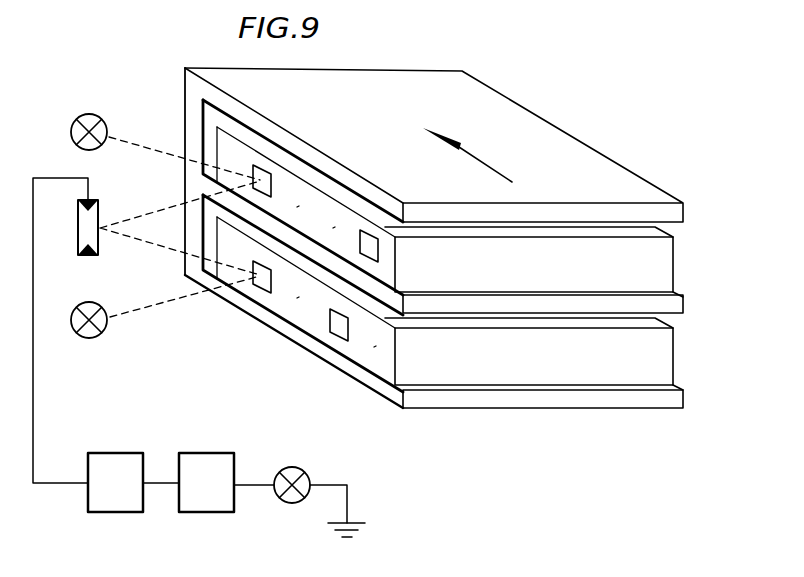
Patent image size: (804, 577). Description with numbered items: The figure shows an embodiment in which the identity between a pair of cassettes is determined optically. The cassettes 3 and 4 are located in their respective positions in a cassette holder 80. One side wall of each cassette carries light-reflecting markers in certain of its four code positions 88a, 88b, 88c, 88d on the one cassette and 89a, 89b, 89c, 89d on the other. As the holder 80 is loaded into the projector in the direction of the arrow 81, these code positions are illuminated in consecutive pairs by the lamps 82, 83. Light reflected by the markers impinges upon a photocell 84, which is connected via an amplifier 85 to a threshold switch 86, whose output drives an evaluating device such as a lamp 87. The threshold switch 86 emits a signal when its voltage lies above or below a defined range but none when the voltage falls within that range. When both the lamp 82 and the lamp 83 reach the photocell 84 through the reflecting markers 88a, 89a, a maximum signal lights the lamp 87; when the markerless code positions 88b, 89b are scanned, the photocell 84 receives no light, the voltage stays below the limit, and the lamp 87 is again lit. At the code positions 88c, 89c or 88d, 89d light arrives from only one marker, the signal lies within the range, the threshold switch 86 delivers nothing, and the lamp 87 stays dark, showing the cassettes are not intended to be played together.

The cassette 3 is at (532, 270).
The cassette 4 is at (532, 370).
The cassette holder 80 is at (643, 176).
The arrow 81 is at (463, 152).
The lamp 82 is at (90, 122).
The lamp 83 is at (90, 338).
The photocell 84 is at (80, 223).
The amplifier 85 is at (127, 498).
The threshold switch 86 is at (219, 498).
The lamp 87 is at (295, 475).
The code position 88a is at (266, 170).
The code position 88b is at (297, 207).
The code position 88c is at (333, 228).
The code position 88d is at (370, 245).
The code position 89a is at (254, 284).
The code position 89b is at (297, 298).
The code position 89c is at (334, 329).
The code position 89d is at (374, 347).